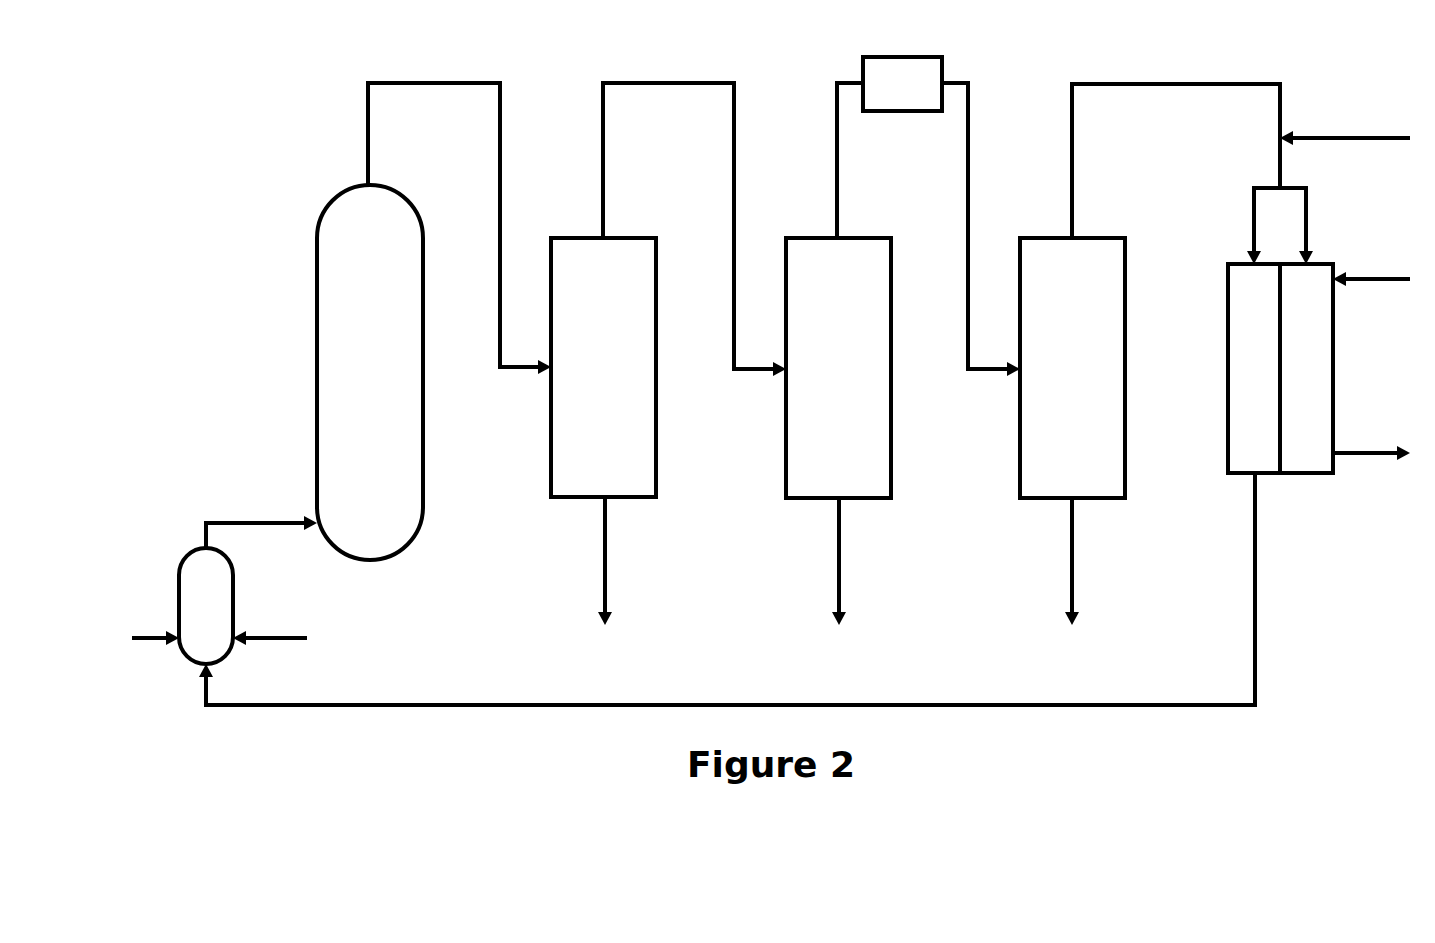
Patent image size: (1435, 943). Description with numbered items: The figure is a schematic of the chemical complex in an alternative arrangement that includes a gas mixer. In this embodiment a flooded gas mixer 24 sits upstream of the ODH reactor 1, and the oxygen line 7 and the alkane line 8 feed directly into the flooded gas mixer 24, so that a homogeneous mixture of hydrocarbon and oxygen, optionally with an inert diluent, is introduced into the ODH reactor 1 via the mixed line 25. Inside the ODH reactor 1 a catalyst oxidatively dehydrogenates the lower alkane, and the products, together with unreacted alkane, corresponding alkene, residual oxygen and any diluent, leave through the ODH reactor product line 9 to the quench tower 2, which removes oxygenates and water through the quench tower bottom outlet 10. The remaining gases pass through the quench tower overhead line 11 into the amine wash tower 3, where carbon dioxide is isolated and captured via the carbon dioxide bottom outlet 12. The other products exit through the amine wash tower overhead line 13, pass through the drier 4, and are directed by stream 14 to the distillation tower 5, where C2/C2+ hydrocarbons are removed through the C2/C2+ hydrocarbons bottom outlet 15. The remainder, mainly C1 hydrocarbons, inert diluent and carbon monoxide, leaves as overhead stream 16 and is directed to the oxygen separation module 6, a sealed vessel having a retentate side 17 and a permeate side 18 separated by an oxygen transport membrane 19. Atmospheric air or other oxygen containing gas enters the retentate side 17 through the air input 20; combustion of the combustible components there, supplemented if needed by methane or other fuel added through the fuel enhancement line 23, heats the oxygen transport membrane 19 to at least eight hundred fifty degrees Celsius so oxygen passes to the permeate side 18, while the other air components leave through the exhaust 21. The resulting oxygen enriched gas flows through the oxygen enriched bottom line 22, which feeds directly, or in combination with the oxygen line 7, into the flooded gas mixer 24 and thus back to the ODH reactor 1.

The ODH reactor 1 is at (370, 372).
The quench tower 2 is at (603, 367).
The amine wash tower 3 is at (838, 368).
The drier 4 is at (902, 84).
The distillation tower 5 is at (1072, 368).
The oxygen separation module 6 is at (1333, 363).
The oxygen line 7 is at (155, 624).
The alkane line 8 is at (280, 638).
The ODH reactor product line 9 is at (447, 228).
The quench tower bottom outlet 10 is at (589, 561).
The quench tower overhead line 11 is at (675, 229).
The carbon dioxide bottom outlet 12 is at (823, 561).
The amine wash tower overhead line 13 is at (831, 160).
The stream 14 is at (981, 229).
The C2/C2+ hydrocarbons bottom outlet 15 is at (1056, 561).
The overhead stream 16 is at (1192, 174).
The retentate side 17 is at (1306, 368).
The permeate side 18 is at (1254, 368).
The oxygen transport membrane 19 is at (1280, 407).
The air input 20 is at (1371, 268).
The exhaust 21 is at (1371, 468).
The oxygen enriched bottom line 22 is at (748, 589).
The fuel enhancement line 23 is at (1345, 127).
The flooded gas mixer 24 is at (206, 606).
The mixed line 25 is at (261, 520).